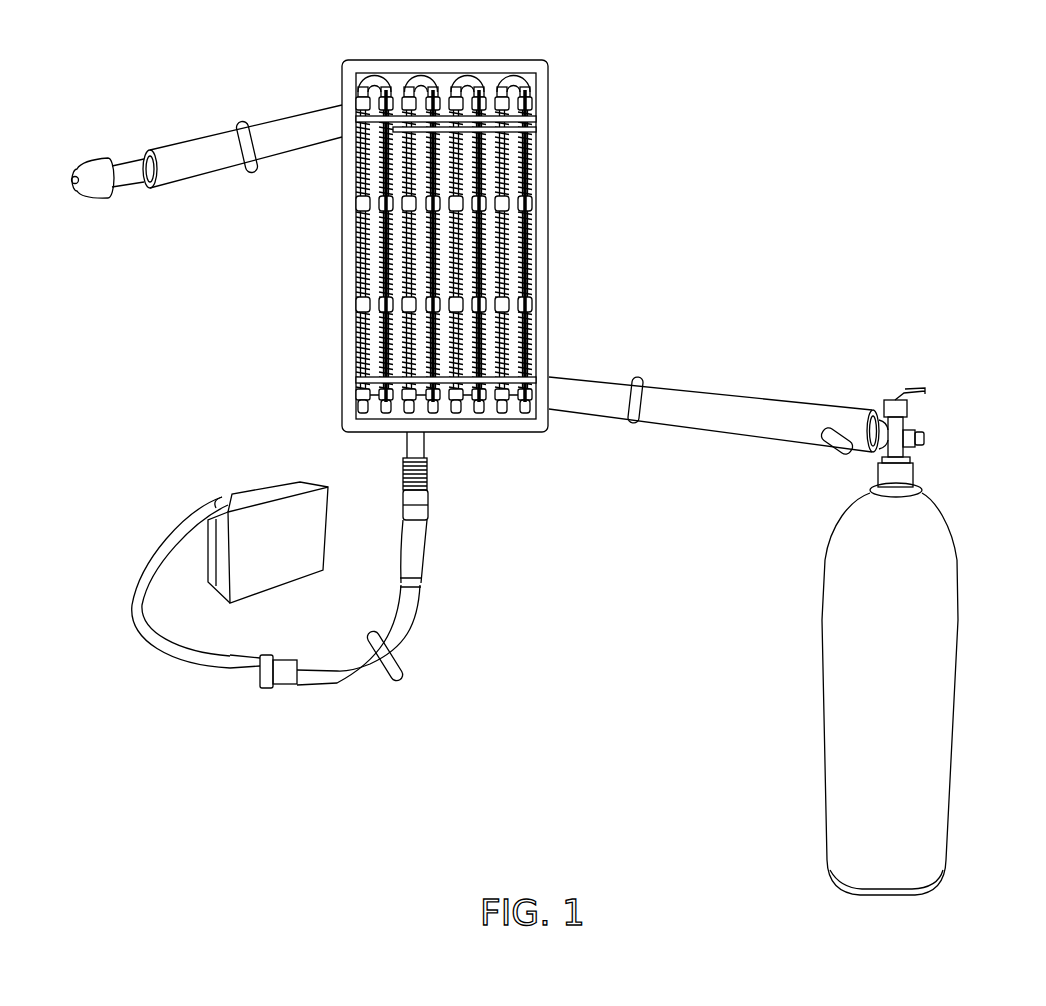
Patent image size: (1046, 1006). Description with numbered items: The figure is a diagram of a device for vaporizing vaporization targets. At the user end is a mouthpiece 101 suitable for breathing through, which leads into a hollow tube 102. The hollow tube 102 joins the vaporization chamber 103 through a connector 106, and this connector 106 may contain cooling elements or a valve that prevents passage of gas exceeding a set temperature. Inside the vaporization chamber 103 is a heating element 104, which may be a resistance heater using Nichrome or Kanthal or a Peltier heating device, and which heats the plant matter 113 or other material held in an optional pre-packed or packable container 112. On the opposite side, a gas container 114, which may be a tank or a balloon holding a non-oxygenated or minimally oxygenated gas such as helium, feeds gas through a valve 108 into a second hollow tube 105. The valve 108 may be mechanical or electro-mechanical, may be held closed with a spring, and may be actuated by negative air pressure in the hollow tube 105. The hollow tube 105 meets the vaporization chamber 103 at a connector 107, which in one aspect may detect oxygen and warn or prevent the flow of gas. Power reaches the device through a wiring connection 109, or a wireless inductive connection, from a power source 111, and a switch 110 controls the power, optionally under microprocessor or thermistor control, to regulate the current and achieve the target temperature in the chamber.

The mouthpiece 101 is at (75, 170).
The hollow tube 102 is at (182, 152).
The vaporization chamber 103 is at (440, 225).
The heating element 104 is at (433, 90).
The hollow tube 105 is at (725, 405).
The connector 106 is at (240, 126).
The connector 107 is at (633, 379).
The valve 108 is at (845, 408).
The wiring connection 109 is at (413, 547).
The switch 110 is at (403, 653).
The power source 111 is at (268, 487).
The container for holding plant matter 112 is at (505, 183).
The plant matter 113 is at (463, 250).
The gas container 114 is at (823, 705).